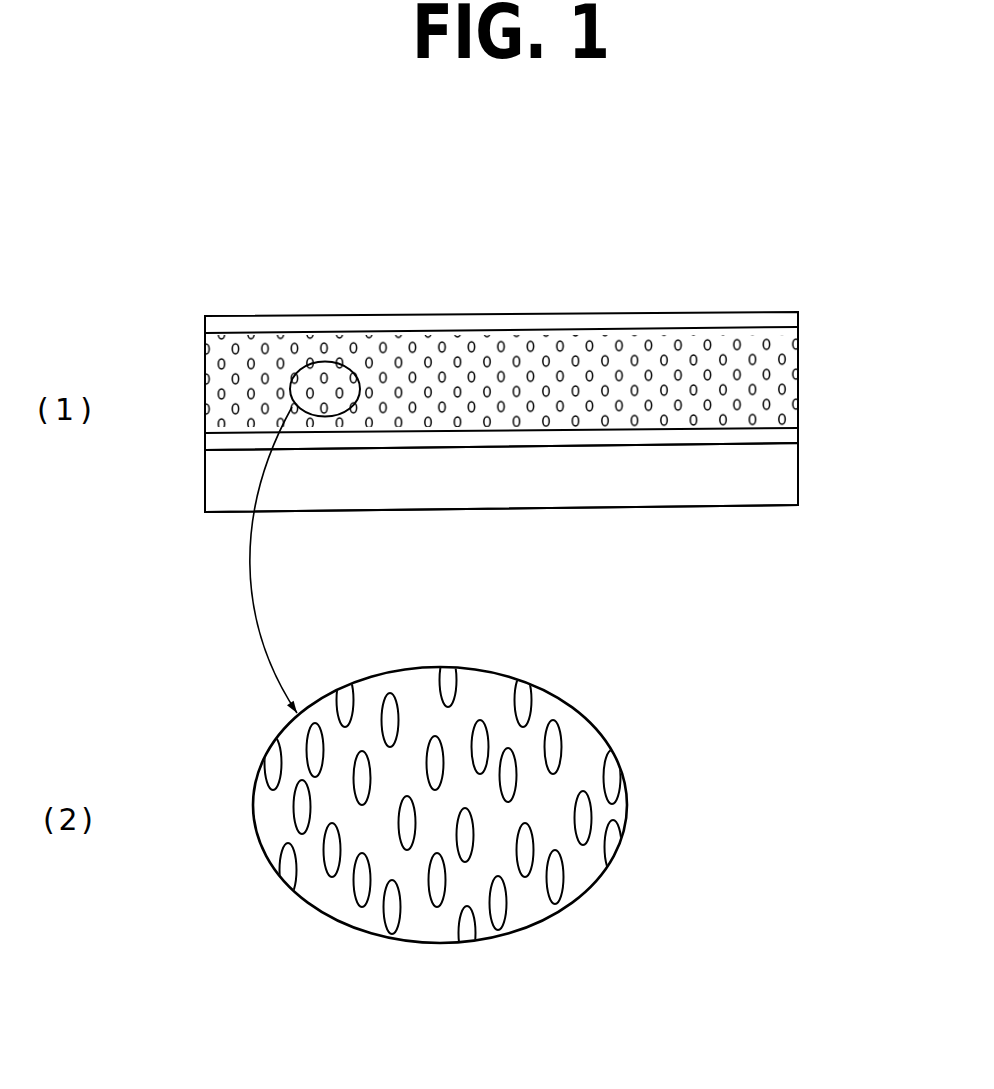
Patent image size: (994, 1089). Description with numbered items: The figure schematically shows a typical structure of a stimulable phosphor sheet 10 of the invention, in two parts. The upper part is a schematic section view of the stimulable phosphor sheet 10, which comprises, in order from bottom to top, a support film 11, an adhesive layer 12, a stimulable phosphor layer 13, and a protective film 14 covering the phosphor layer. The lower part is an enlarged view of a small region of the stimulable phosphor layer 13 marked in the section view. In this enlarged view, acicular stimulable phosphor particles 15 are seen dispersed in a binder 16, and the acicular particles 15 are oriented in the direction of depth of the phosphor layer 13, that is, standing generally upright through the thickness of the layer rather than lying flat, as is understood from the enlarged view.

The stimulable phosphor sheet 10 is at (540, 352).
The support film 11 is at (798, 478).
The adhesive layer 12 is at (798, 432).
The stimulable phosphor layer 13 is at (802, 373).
The protective film 14 is at (798, 313).
The acicular stimulable phosphor particles 15 is at (562, 737).
The binder 16 is at (607, 823).